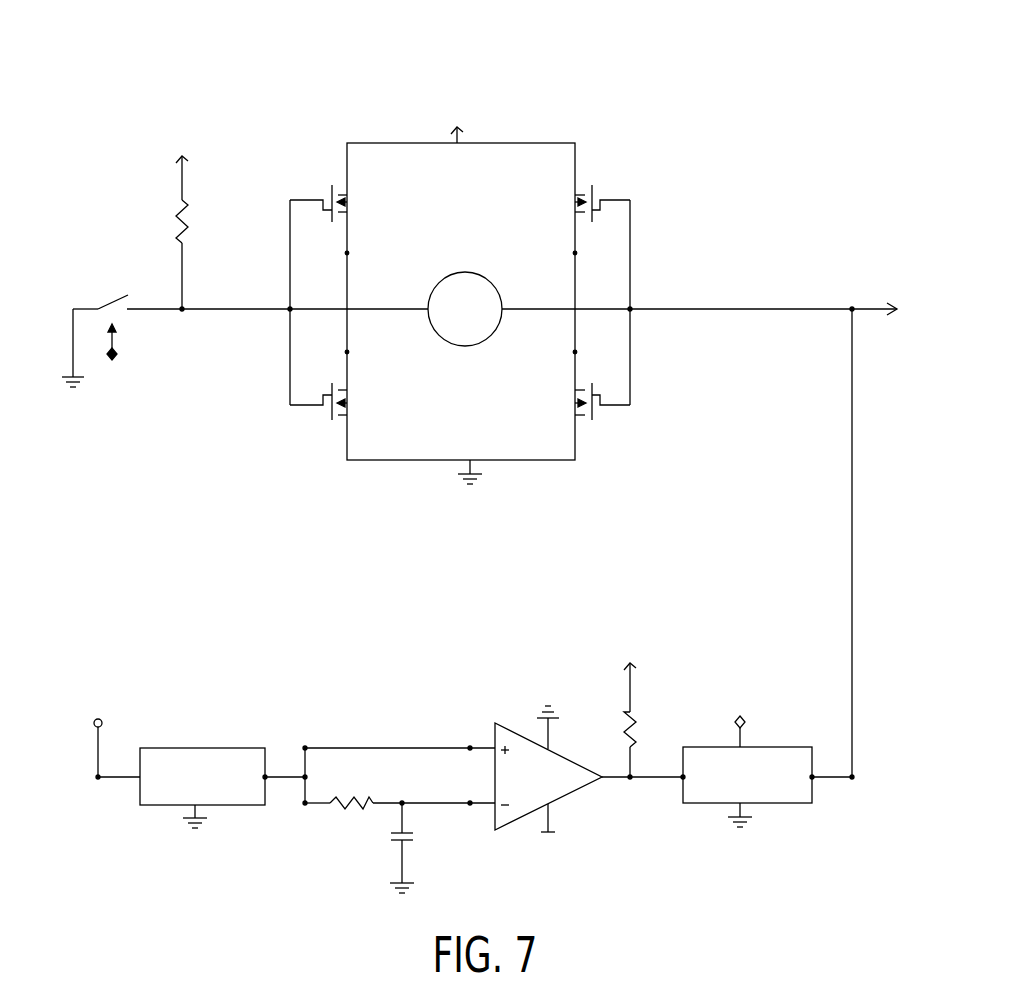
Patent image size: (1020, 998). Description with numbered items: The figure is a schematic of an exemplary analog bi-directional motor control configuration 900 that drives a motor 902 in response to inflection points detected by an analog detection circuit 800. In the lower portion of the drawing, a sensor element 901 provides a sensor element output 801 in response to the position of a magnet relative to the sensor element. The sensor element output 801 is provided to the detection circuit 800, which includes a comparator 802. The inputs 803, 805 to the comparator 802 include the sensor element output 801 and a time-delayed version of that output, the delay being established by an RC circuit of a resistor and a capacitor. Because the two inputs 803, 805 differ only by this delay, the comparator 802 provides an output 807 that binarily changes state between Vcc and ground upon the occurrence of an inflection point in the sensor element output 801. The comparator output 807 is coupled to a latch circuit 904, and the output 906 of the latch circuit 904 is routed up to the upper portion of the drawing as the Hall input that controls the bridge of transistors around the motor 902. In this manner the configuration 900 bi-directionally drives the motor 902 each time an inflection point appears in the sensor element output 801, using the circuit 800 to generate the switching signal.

The analog configuration 900 is at (258, 59).
The motor 902 is at (463, 272).
The analog detection circuit 800 is at (309, 622).
The sensor element output 801 is at (280, 779).
The comparator 802 is at (508, 728).
The comparator input 803 is at (399, 758).
The comparator input 805 is at (430, 847).
The comparator output 807 is at (645, 780).
The sensor element 901 is at (207, 746).
The latch circuit 904 is at (705, 745).
The latch circuit output 906 is at (830, 780).